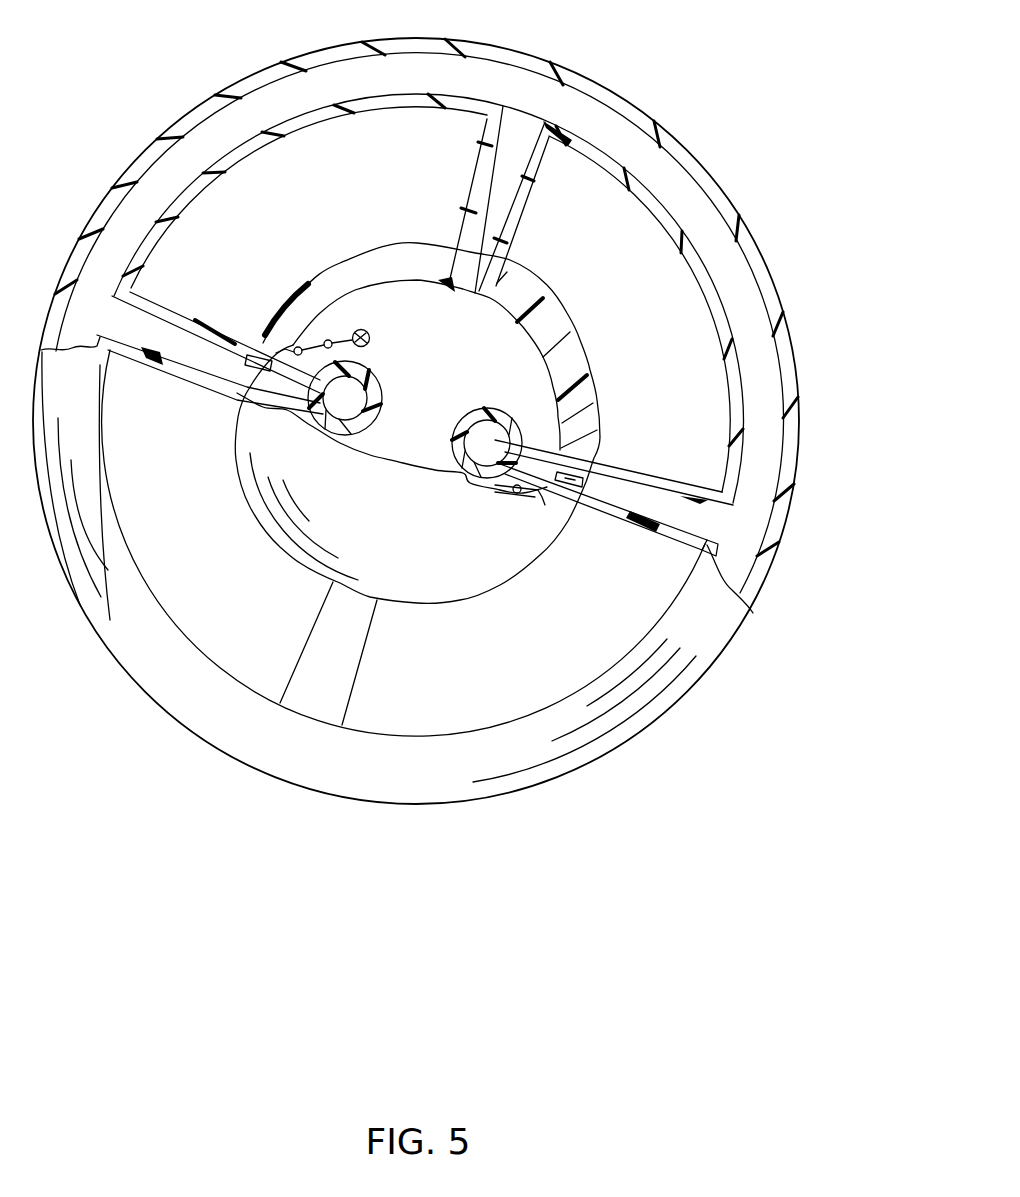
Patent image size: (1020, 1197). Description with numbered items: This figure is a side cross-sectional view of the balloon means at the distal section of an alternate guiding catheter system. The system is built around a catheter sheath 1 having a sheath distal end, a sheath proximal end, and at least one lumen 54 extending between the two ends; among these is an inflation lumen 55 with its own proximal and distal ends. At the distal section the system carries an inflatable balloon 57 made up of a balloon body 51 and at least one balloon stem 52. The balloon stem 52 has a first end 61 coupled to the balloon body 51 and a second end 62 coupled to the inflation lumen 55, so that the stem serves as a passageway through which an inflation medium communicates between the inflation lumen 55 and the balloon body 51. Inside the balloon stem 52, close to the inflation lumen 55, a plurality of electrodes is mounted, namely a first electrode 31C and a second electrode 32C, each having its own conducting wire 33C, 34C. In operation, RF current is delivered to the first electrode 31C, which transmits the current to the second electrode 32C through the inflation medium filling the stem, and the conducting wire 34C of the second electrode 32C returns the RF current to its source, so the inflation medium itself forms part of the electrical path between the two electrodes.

The catheter sheath 1 is at (475, 357).
The balloon body 51 is at (722, 235).
The balloon stem 52 is at (670, 503).
The lumen 54 is at (530, 280).
The inflation lumen 55 is at (523, 433).
The inflatable balloon 57 is at (591, 79).
The first end of the balloon stem 61 is at (723, 543).
The second end of the balloon stem 62 is at (557, 433).
The first electrode 31C is at (247, 370).
The second electrode 32C is at (575, 478).
The conducting wire of the first electrode 33C is at (352, 332).
The conducting wire of the second electrode 34C is at (538, 497).